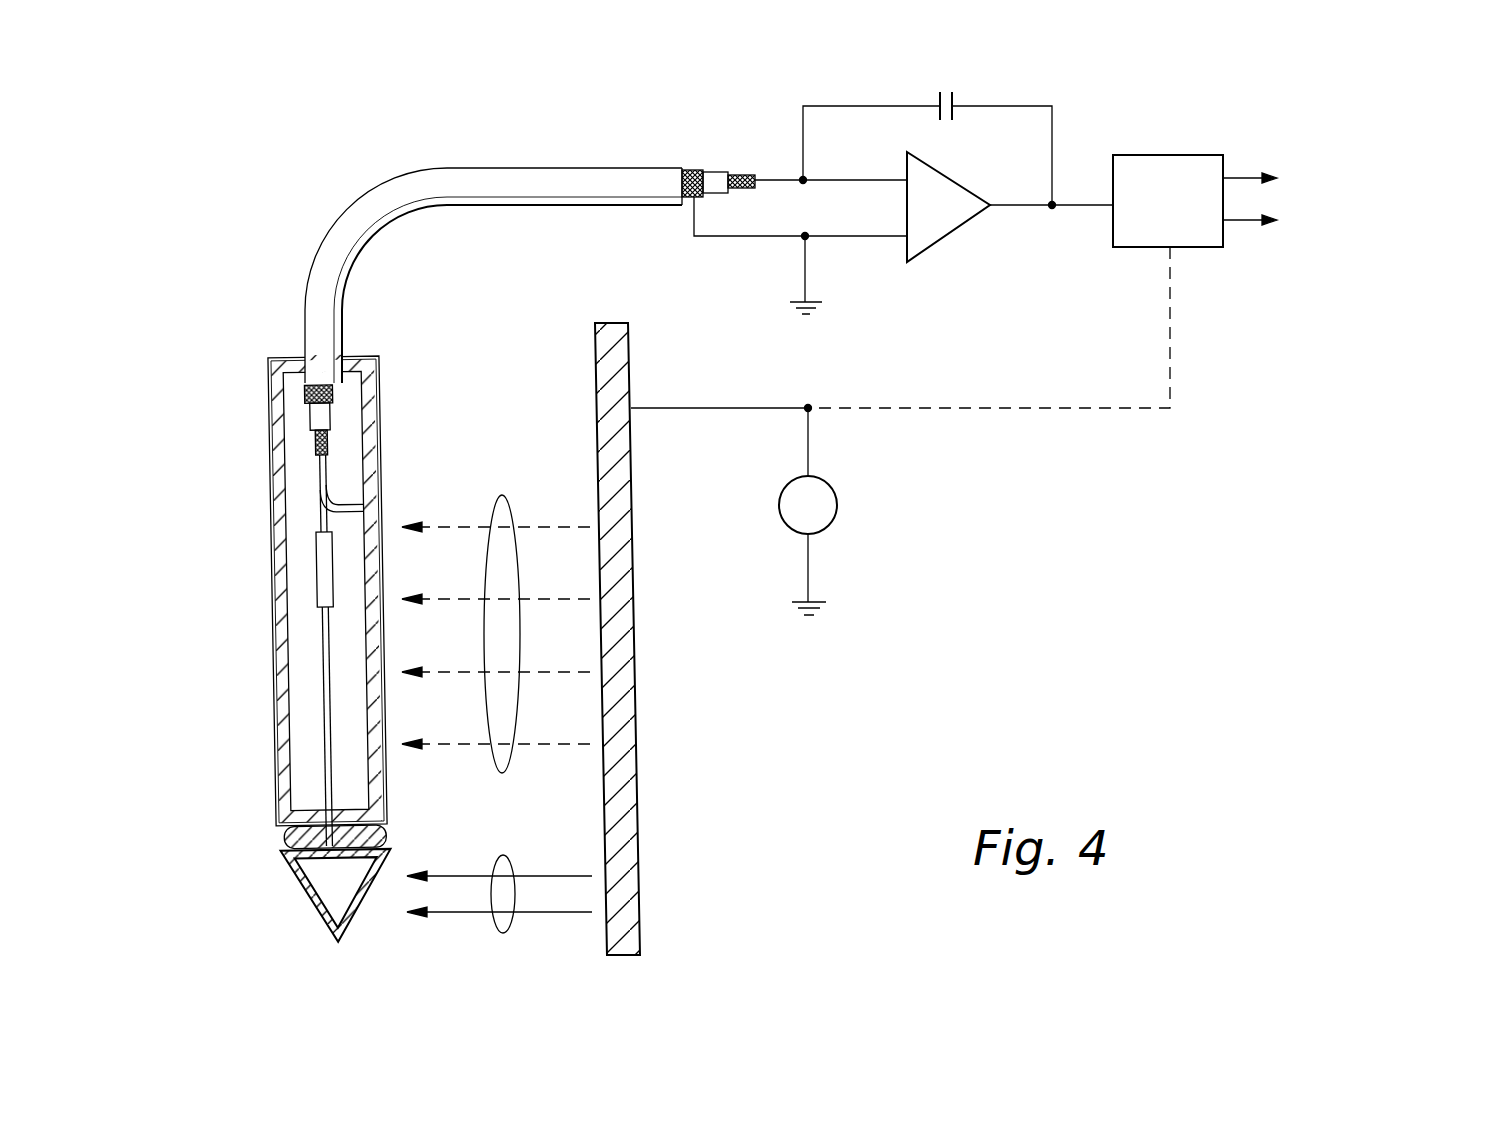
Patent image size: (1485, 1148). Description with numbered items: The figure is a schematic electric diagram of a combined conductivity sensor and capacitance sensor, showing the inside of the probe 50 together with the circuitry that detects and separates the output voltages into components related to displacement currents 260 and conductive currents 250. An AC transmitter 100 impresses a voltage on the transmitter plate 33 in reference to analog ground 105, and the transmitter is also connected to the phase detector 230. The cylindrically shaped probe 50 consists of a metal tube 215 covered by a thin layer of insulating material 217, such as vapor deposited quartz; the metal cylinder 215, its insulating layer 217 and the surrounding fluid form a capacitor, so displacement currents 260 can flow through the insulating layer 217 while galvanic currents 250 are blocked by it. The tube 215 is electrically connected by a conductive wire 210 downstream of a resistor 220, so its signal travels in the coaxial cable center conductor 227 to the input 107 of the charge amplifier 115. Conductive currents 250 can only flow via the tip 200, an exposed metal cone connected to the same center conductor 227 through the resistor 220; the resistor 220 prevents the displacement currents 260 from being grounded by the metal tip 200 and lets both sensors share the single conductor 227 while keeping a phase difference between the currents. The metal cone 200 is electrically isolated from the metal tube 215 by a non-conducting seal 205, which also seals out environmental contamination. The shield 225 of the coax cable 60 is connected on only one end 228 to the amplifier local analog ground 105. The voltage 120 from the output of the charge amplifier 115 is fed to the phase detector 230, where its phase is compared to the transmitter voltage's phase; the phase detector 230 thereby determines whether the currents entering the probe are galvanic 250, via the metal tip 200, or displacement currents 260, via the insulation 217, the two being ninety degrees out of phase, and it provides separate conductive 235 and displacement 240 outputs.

The probe 50 is at (232, 343).
The coax cable 60 is at (348, 208).
The end 228 is at (694, 197).
The input 107 is at (898, 180).
The charge amplifier 115 is at (941, 172).
The voltage 120 is at (1080, 207).
The analog ground 105 is at (808, 300).
The phase detector 230 is at (1164, 154).
The conductive output 235 is at (1247, 175).
The displacement output 240 is at (1247, 222).
The AC transmitter 100 is at (838, 505).
The transmitter plate 33 is at (634, 665).
The displacement currents 260 is at (505, 494).
The conductive currents 250 is at (504, 855).
The metal tube 215 is at (283, 622).
The insulating material 217 is at (276, 680).
The shield 225 is at (310, 393).
The center conductor 227 is at (318, 440).
The conductive wire 210 is at (322, 480).
The resistor 220 is at (325, 553).
The non-conducting seal 205 is at (285, 836).
The tip 200 is at (303, 897).